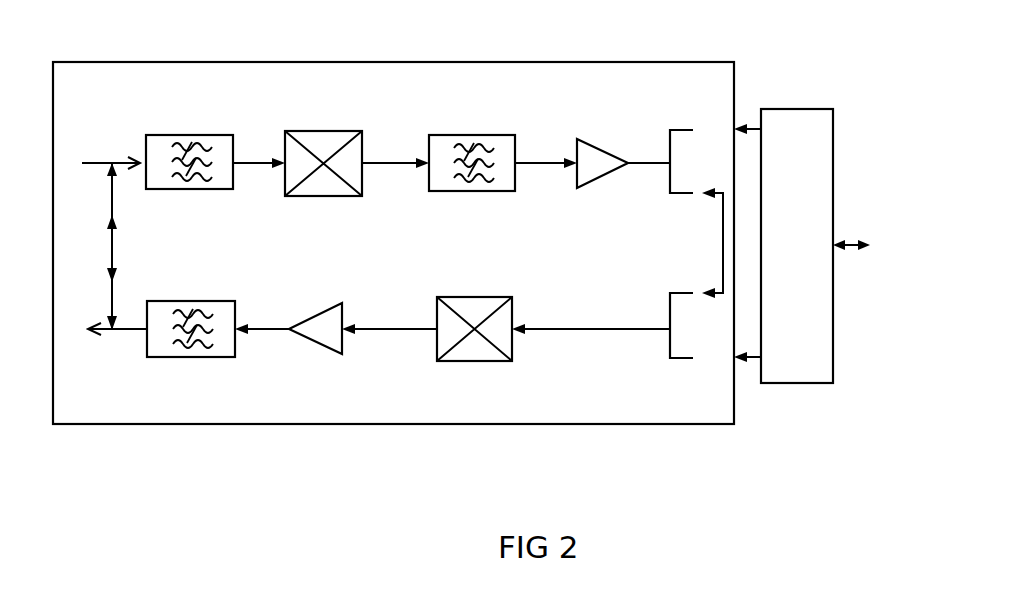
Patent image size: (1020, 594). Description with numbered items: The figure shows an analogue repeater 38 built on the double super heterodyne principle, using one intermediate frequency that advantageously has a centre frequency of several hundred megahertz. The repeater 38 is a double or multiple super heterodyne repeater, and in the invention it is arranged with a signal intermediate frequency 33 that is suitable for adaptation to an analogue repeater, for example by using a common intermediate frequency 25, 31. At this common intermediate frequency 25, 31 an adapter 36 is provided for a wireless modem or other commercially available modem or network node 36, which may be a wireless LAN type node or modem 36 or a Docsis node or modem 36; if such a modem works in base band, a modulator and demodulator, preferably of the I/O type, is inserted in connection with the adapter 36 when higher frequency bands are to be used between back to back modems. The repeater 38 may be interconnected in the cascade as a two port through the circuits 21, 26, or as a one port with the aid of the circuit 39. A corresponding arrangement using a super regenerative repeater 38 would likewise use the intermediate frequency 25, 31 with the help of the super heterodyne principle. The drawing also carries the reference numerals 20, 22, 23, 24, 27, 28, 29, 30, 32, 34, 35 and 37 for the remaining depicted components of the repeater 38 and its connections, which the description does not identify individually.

The radio frequency transceiver 20 is at (785, 490).
The circuit 21 is at (114, 337).
The transmit filter 22 is at (191, 363).
The transmit amplifier 23 is at (311, 346).
The transmit mixer 24 is at (466, 365).
The common intermediate frequency 25 is at (681, 363).
The circuit 26 is at (108, 157).
The receive filter 27 is at (211, 131).
The receive mixer 28 is at (345, 132).
The intermediate frequency filter 29 is at (510, 131).
The receive amplifier 30 is at (597, 138).
The common intermediate frequency 31 is at (686, 129).
The loopback connection 32 is at (712, 242).
The signal intermediate frequency 33 is at (597, 321).
The receive signal line 34 is at (258, 167).
The transmit signal line 35 is at (384, 335).
The adapter 36 is at (781, 103).
The control interface 37 is at (866, 254).
The repeater 38 is at (738, 397).
The circuit 39 is at (118, 244).